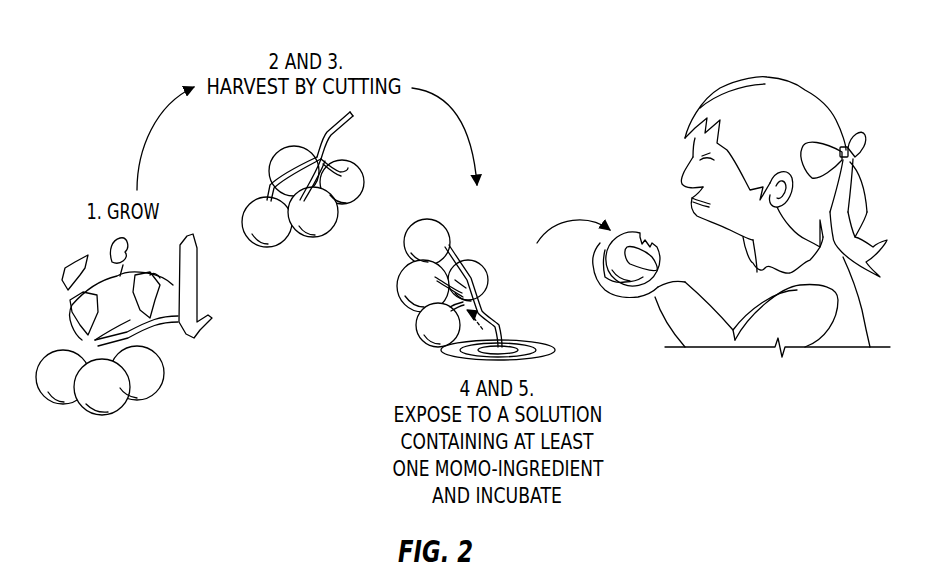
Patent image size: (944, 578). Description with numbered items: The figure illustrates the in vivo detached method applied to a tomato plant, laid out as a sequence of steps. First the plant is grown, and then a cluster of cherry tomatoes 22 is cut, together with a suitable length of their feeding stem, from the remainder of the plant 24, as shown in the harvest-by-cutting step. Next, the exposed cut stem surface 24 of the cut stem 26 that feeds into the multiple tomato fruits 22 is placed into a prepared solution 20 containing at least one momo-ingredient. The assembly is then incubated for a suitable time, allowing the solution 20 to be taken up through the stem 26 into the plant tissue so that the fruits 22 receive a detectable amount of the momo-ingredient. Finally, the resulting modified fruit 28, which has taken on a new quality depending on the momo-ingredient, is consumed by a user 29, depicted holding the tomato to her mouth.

The solution 20 is at (530, 340).
The cherry tomatoes 22 is at (98, 392).
The exposed cut stem surface 24 is at (102, 273).
The cut stem 26 is at (167, 323).
The modified fruit 28 is at (633, 233).
The user 29 is at (815, 82).